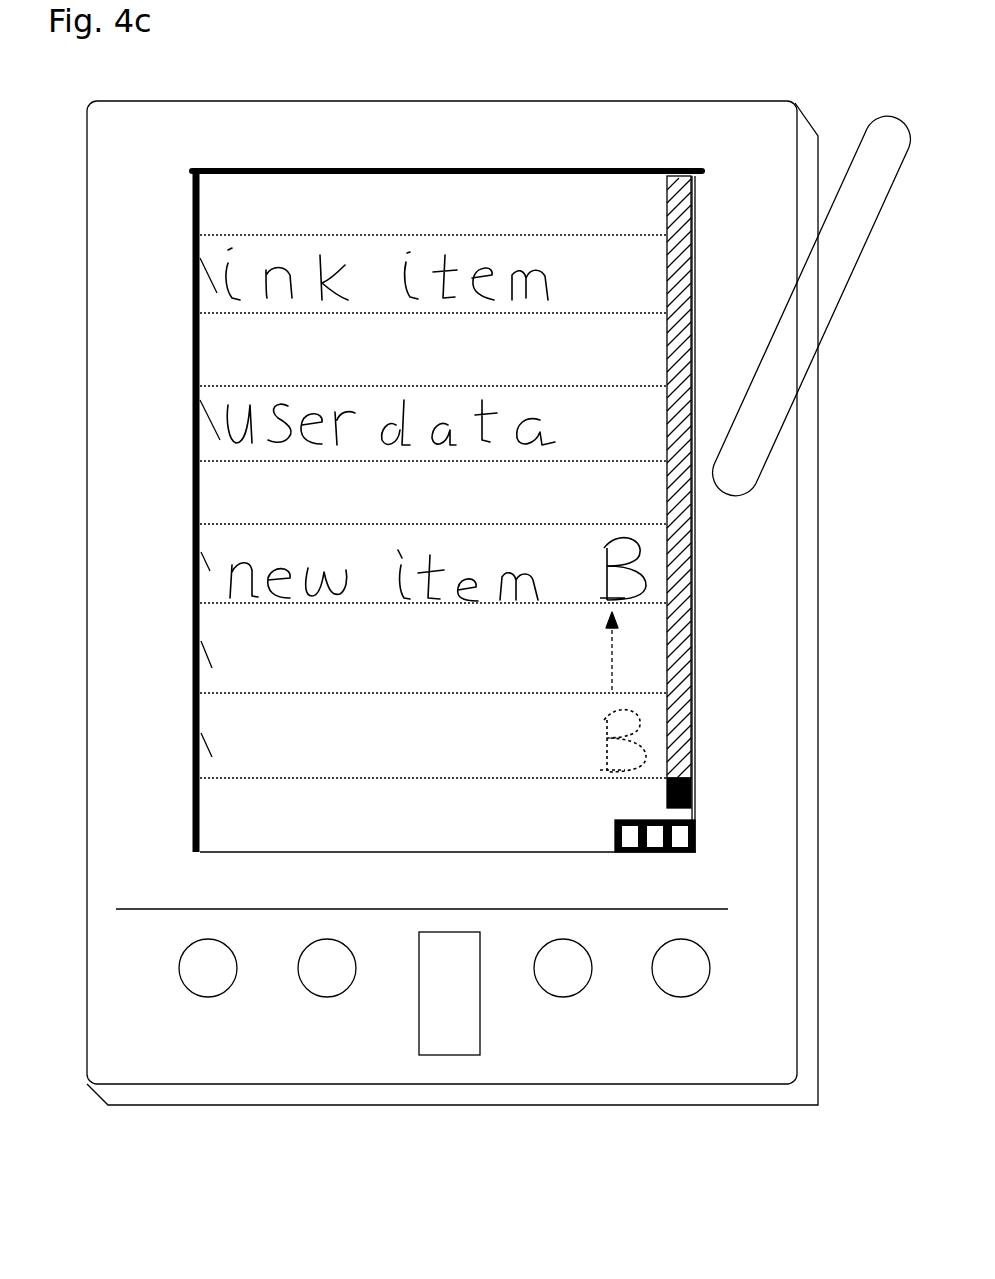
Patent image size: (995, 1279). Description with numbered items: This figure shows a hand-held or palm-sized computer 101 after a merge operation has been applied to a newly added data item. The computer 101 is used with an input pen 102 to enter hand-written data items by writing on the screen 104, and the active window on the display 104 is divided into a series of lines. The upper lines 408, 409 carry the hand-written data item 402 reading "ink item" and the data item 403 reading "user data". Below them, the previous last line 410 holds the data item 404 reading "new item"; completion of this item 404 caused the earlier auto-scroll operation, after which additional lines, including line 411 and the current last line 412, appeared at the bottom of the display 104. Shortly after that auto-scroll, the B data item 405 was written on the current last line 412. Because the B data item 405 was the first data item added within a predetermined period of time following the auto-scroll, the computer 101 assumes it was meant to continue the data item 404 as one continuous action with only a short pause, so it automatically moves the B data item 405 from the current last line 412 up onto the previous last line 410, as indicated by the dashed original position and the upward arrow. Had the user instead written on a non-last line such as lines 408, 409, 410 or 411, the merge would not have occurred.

The hand-held computer 101 is at (385, 99).
The input pen 102 is at (840, 167).
The screen 104 is at (528, 188).
The data item 402 is at (298, 250).
The data item 403 is at (316, 395).
The data item 404 is at (430, 550).
The B data item 405 is at (612, 533).
The line 408 is at (192, 243).
The line 409 is at (192, 385).
The previous last line 410 is at (192, 532).
The line 411 is at (192, 627).
The current last line 412 is at (192, 717).